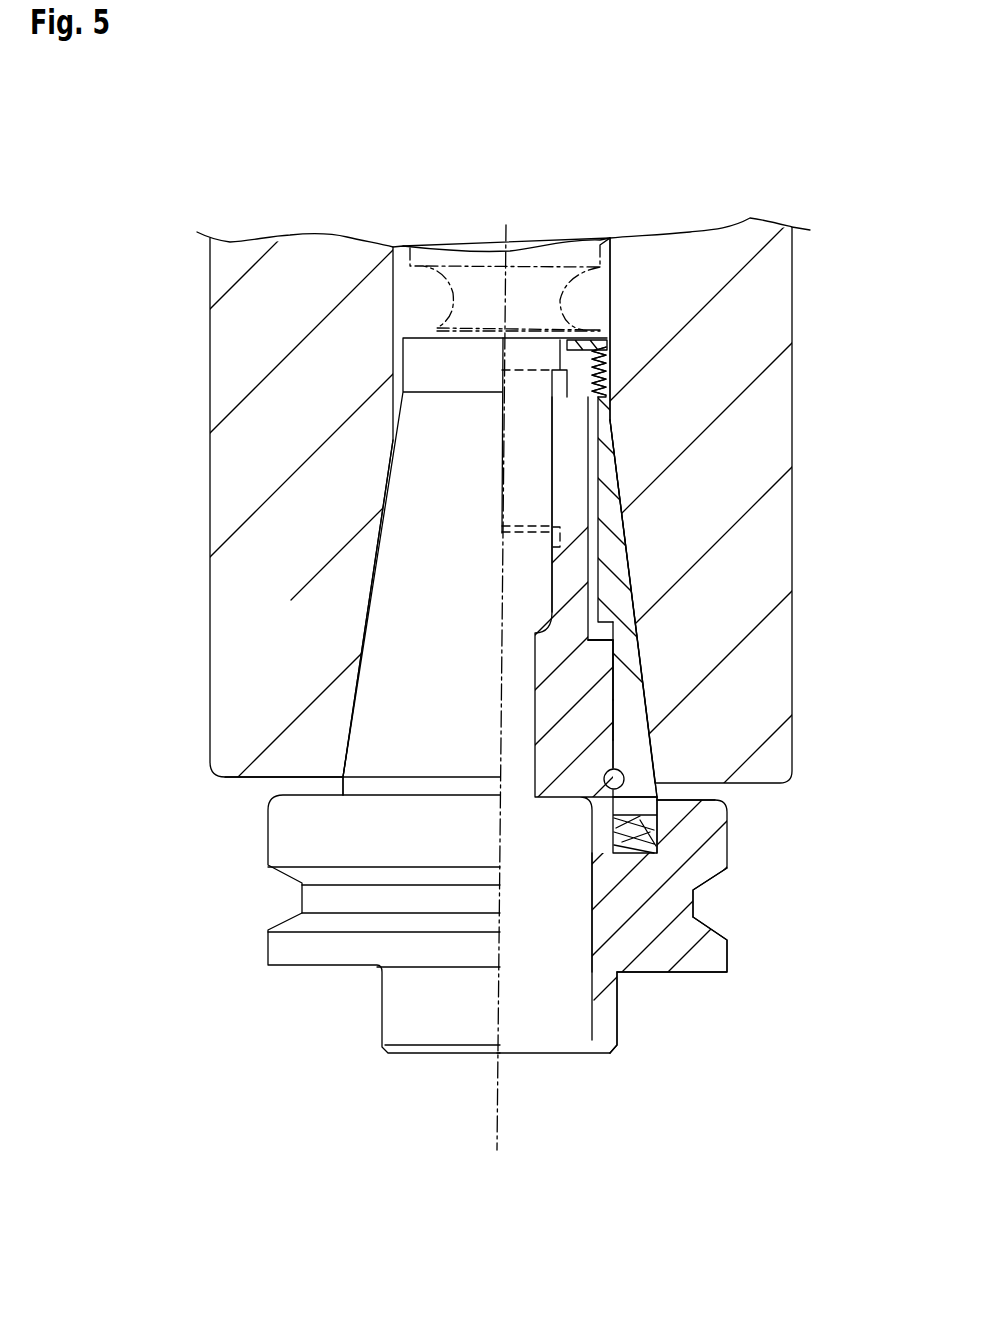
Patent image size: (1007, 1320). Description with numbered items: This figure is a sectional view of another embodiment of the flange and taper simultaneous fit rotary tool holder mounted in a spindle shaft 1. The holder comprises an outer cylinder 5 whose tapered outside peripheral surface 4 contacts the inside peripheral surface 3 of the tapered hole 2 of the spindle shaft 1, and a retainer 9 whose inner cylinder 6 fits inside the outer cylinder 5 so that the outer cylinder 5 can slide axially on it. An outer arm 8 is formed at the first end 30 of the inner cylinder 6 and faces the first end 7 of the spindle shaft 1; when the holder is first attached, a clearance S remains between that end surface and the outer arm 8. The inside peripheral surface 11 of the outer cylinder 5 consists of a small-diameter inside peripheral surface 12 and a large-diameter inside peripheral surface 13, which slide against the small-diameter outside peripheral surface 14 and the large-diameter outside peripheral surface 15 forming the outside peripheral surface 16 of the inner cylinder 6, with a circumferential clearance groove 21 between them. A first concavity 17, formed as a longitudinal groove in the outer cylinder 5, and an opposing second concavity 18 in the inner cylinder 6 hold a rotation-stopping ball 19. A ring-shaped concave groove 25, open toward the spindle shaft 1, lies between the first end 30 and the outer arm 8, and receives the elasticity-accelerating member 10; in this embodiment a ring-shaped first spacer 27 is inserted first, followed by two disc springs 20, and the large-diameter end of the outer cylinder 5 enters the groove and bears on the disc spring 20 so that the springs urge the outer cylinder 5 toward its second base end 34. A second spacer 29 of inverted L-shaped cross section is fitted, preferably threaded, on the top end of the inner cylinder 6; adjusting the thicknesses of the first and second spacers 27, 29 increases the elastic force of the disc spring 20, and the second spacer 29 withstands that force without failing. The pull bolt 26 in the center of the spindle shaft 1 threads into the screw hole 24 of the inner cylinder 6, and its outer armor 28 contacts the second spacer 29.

The spindle shaft 1 is at (196, 731).
The tapered hole 2 is at (365, 660).
The inside peripheral surface 3 is at (380, 558).
The tapered outside peripheral surface 4 is at (623, 498).
The outer cylinder 5 is at (638, 567).
The inner cylinder 6 is at (617, 419).
The first end 7 is at (232, 778).
The outer arm 8 is at (735, 866).
The retainer 9 is at (738, 970).
The elasticity-accelerating member 10 is at (658, 830).
The inside peripheral surface 11 is at (607, 689).
The small-diameter inside peripheral surface 12 is at (597, 470).
The large-diameter inside peripheral surface 13 is at (612, 722).
The small-diameter outside peripheral surface 14 is at (617, 460).
The large-diameter outside peripheral surface 15 is at (618, 713).
The outside peripheral surface 16 is at (626, 662).
The first concavity 17 is at (614, 818).
The second concavity 18 is at (624, 768).
The rotation-stopping ball 19 is at (604, 780).
The disc spring 20 is at (658, 825).
The circumferential clearance groove 21 is at (590, 635).
The screw hole 24 is at (553, 450).
The concave groove 25 is at (680, 860).
The pull bolt 26 is at (607, 257).
The first spacer 27 is at (628, 856).
The outer armor 28 is at (600, 330).
The second spacer 29 is at (602, 363).
The first end 30 is at (642, 980).
The second base end 34 is at (428, 238).
The clearance S is at (292, 785).